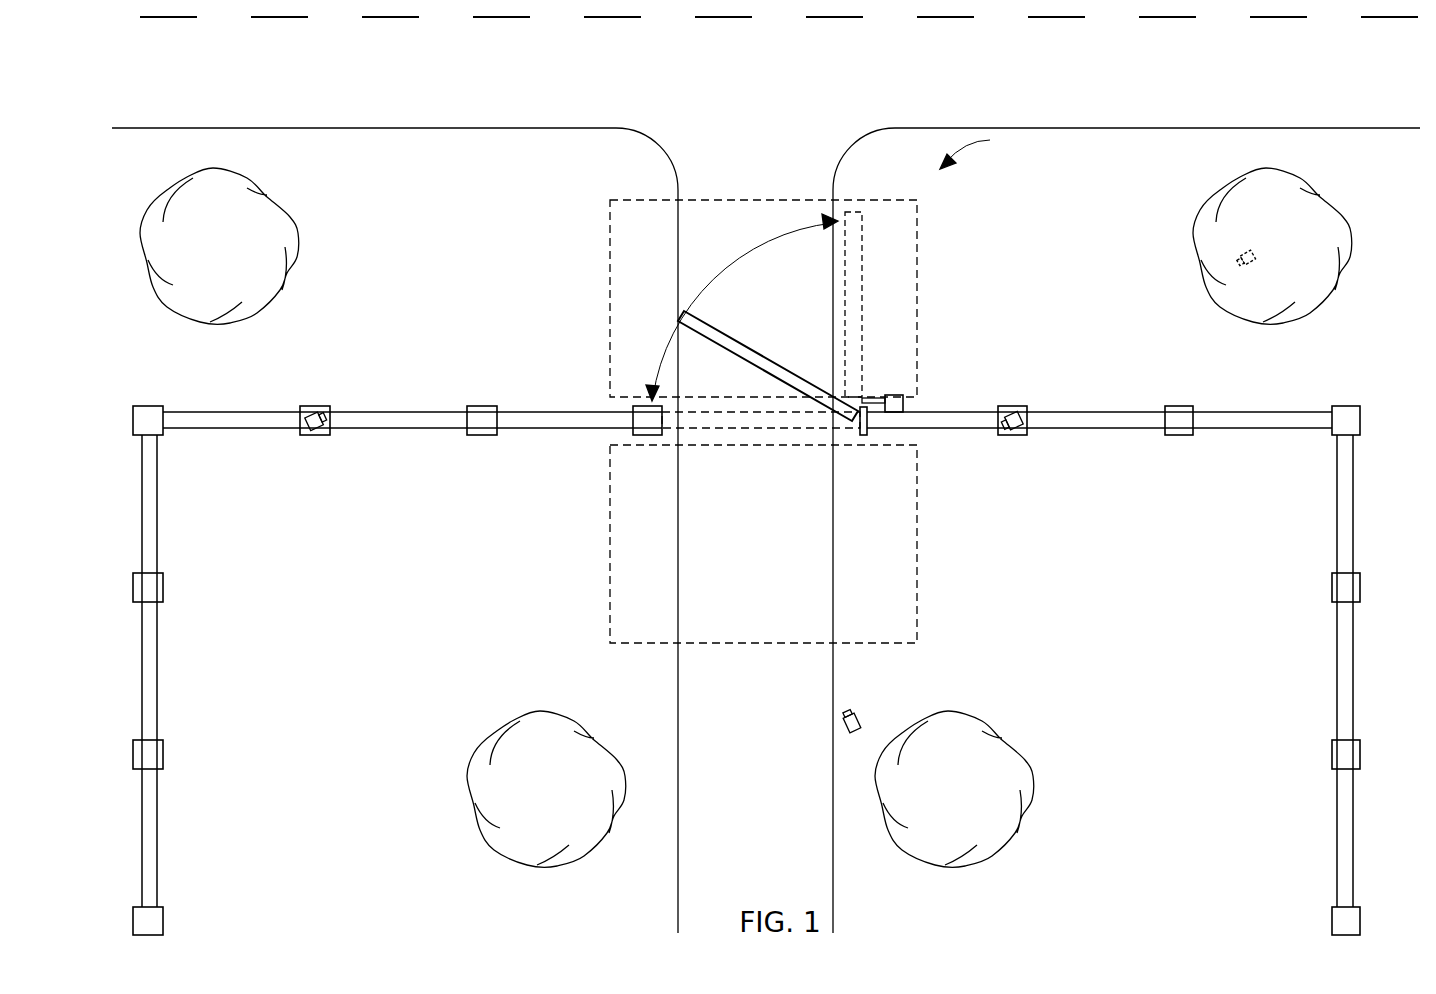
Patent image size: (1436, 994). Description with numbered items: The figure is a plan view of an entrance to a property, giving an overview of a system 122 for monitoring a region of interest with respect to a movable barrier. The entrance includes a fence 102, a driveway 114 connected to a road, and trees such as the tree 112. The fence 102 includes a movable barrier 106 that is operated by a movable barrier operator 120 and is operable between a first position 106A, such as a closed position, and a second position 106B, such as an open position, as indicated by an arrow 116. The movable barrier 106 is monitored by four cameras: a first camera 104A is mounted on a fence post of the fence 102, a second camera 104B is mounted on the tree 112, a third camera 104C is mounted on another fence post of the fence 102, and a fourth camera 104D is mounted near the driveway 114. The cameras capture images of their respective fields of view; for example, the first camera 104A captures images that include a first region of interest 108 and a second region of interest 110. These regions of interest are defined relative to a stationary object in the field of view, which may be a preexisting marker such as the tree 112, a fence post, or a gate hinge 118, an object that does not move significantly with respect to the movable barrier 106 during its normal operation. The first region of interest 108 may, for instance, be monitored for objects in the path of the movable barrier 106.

The fence 102 is at (243, 408).
The first camera 104A is at (320, 403).
The second camera 104B is at (1252, 250).
The third camera 104C is at (1015, 405).
The fourth camera 104D is at (862, 718).
The movable barrier 106 is at (787, 353).
The first position 106A is at (753, 430).
The second position 106B is at (862, 318).
The first region of interest 108 is at (707, 198).
The second region of interest 110 is at (610, 532).
The tree 112 is at (1338, 200).
The driveway 114 is at (678, 707).
The arrow 116 is at (713, 275).
The gate hinge 118 is at (867, 423).
The movable barrier operator 120 is at (907, 400).
The system 122 is at (991, 157).